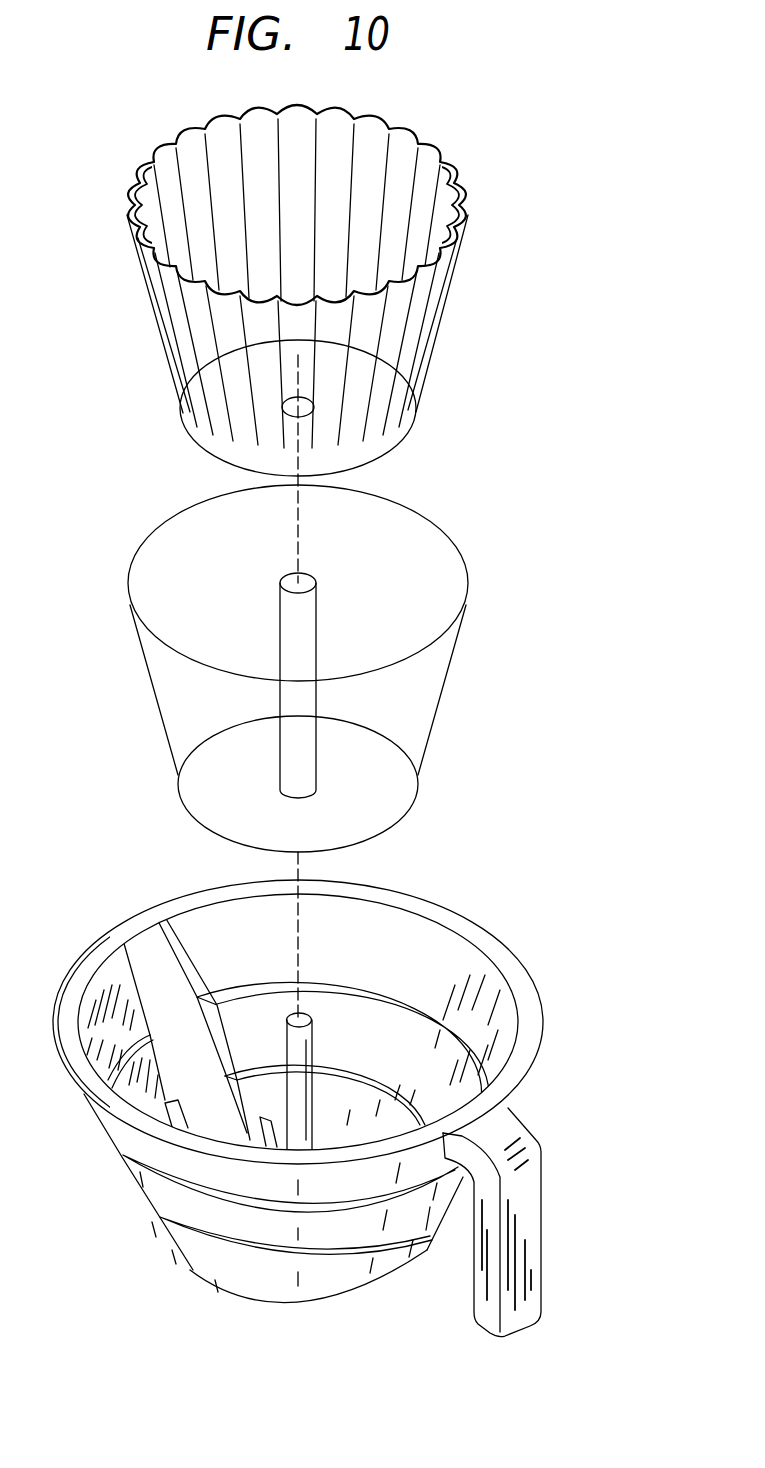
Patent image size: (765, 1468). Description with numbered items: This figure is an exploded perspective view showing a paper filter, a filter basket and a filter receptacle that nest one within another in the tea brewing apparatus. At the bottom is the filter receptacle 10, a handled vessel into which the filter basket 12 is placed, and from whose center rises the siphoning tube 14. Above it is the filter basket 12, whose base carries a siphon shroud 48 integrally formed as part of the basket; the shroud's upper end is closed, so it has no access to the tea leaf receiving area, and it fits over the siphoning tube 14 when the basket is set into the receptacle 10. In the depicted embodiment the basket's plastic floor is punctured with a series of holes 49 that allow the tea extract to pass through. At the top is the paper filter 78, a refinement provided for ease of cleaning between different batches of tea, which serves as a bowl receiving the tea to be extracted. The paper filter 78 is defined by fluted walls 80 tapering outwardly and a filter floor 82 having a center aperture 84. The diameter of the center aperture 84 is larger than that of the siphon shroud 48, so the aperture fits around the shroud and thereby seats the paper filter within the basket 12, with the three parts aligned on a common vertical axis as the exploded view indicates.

The filter receptacle 10 is at (505, 1104).
The filter basket 12 is at (440, 698).
The siphoning tube 14 is at (307, 1033).
The siphon shroud 48 is at (307, 613).
The holes 49 is at (395, 808).
The paper filter 78 is at (430, 153).
The fluted walls 80 is at (410, 340).
The filter floor 82 is at (400, 423).
The center aperture 84 is at (312, 413).